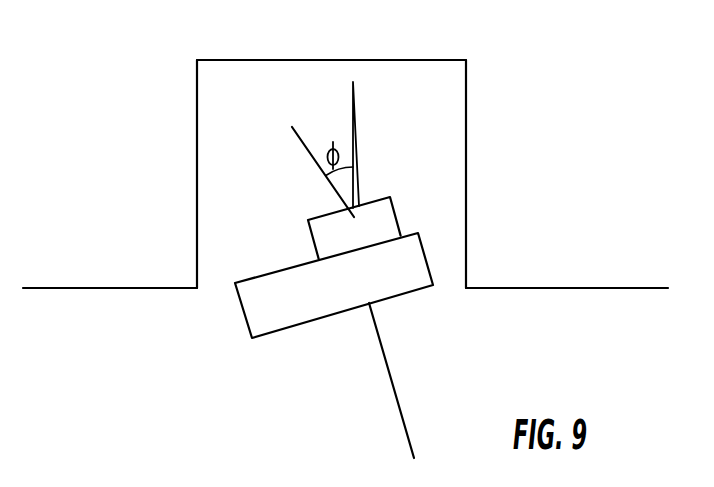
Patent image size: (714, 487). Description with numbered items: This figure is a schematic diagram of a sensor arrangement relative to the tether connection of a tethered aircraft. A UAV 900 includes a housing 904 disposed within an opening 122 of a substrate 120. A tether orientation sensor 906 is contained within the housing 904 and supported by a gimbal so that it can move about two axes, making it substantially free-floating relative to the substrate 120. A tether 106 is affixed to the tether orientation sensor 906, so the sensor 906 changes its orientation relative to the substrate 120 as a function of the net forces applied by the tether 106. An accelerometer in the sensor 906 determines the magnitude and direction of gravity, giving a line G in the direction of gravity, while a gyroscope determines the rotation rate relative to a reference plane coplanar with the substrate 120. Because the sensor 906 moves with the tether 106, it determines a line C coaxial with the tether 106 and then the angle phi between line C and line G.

The UAV 900 is at (502, 120).
The housing 904 is at (343, 60).
The tether orientation sensor 906 is at (272, 305).
The substrate 120 is at (588, 287).
The opening 122 is at (466, 288).
The tether 106 is at (407, 421).
The line G is at (358, 147).
The line C is at (320, 168).